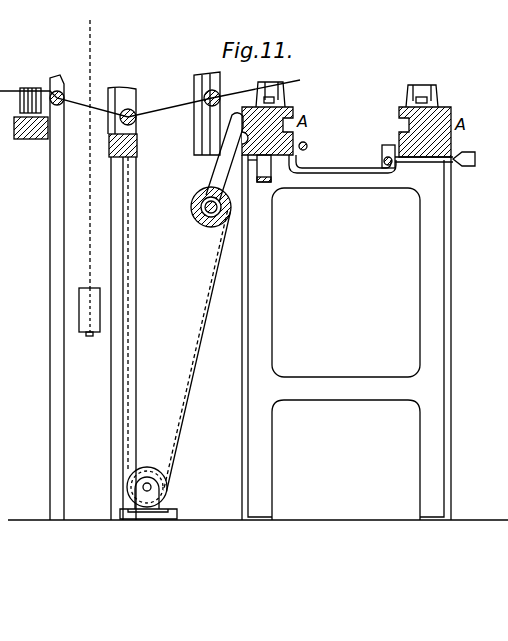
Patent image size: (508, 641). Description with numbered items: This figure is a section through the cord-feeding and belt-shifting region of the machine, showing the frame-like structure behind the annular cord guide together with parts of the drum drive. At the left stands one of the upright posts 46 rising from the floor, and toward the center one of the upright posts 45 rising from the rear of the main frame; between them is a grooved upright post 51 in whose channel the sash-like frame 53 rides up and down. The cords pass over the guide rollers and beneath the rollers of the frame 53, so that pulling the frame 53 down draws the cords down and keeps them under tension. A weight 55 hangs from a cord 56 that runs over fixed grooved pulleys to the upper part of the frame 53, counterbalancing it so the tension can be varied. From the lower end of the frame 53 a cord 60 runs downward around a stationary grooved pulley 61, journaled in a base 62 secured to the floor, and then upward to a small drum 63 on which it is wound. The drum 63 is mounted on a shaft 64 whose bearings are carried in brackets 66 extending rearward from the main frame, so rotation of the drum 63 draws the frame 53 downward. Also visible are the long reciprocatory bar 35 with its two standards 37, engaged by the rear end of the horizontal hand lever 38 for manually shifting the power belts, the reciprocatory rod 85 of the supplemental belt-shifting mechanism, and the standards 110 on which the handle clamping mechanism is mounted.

The reciprocatory bar 35 is at (384, 158).
The standards 37 is at (388, 145).
The hand lever 38 is at (471, 166).
The upright posts 45 is at (204, 81).
The upright posts 46 is at (50, 205).
The upright posts 51 is at (137, 298).
The frame 53 is at (137, 150).
The weight 55 is at (82, 333).
The cord 56 is at (90, 245).
The cord 60 is at (136, 245).
The stationary grooved pulley 61 is at (168, 481).
The base 62 is at (152, 495).
The drum 63 is at (190, 207).
The shaft 64 is at (204, 196).
The brackets 66 is at (222, 168).
The reciprocatory rod 85 is at (306, 143).
The standards 110 is at (432, 96).